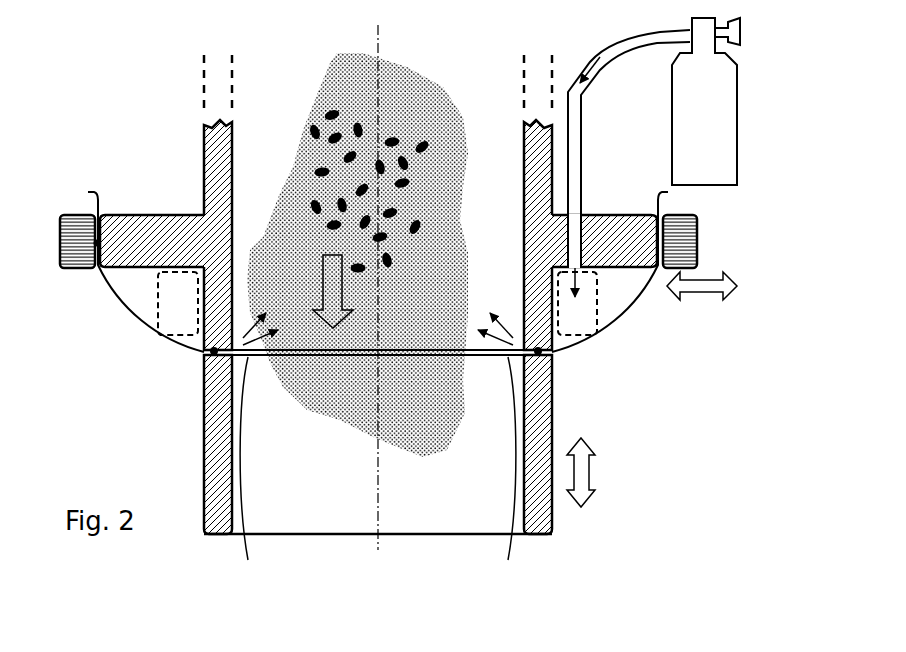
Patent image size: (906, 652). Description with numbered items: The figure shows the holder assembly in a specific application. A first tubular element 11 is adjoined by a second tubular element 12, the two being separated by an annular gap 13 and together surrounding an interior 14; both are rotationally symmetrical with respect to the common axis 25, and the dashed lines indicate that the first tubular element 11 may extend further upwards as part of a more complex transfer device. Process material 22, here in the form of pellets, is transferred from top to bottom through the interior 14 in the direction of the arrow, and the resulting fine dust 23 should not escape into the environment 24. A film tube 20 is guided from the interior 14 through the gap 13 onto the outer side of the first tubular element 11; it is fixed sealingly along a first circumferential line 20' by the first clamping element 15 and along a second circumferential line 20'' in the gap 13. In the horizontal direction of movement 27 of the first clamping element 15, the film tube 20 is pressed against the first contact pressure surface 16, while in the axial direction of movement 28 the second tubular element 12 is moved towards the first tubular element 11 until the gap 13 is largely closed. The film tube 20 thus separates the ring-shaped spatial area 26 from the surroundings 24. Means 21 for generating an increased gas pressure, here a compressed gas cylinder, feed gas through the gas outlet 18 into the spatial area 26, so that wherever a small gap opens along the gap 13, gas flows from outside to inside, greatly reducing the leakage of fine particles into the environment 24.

The first tubular element 11 is at (204, 145).
The second tubular element 12 is at (204, 447).
The annular gap 13 is at (197, 359).
The interior 14 is at (378, 436).
The first clamping element 15 is at (69, 270).
The first contact pressure surface 16 is at (108, 226).
The gas outlet 18 is at (588, 252).
The film tube 20 is at (380, 296).
The first circumferential line 20' is at (65, 203).
The second circumferential line 20'' is at (502, 281).
The means for generating an increased gas pressure 21 is at (728, 108).
The process material 22 is at (328, 110).
The fine dust 23 is at (294, 203).
The environment 24 is at (782, 381).
The common axis 25 is at (380, 50).
The spatial area 26 is at (172, 304).
The direction of movement 27 is at (701, 296).
The axial direction of movement 28 is at (590, 478).